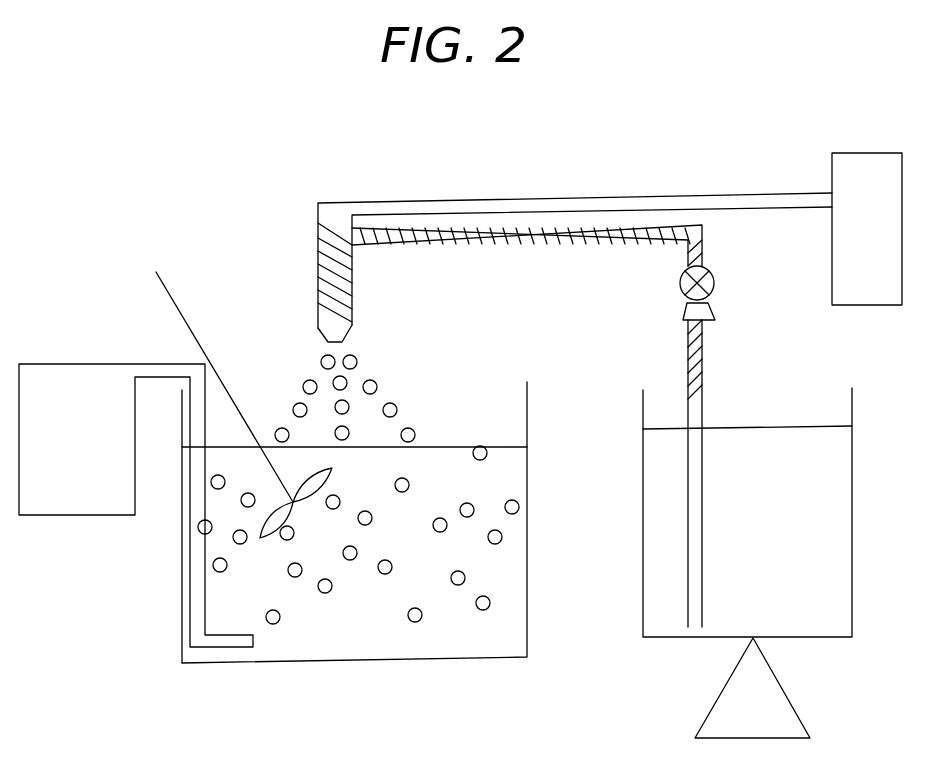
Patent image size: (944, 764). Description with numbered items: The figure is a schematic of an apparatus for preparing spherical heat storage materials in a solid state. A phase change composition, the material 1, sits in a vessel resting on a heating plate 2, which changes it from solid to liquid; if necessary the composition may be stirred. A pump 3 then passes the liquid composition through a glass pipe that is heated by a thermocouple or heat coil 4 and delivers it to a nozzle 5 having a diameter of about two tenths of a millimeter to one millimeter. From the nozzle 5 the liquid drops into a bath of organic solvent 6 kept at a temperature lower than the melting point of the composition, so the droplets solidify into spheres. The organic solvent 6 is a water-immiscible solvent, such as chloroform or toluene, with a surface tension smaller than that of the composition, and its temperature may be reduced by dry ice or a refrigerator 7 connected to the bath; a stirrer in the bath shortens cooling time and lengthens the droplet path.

The material 1 is at (747, 512).
The heating plate 2 is at (752, 688).
The pump 3 is at (714, 292).
The thermocouple or heat coil 4 is at (333, 280).
The nozzle 5 is at (333, 326).
The organic solvent 6 is at (354, 509).
The refrigerator 7 is at (136, 505).